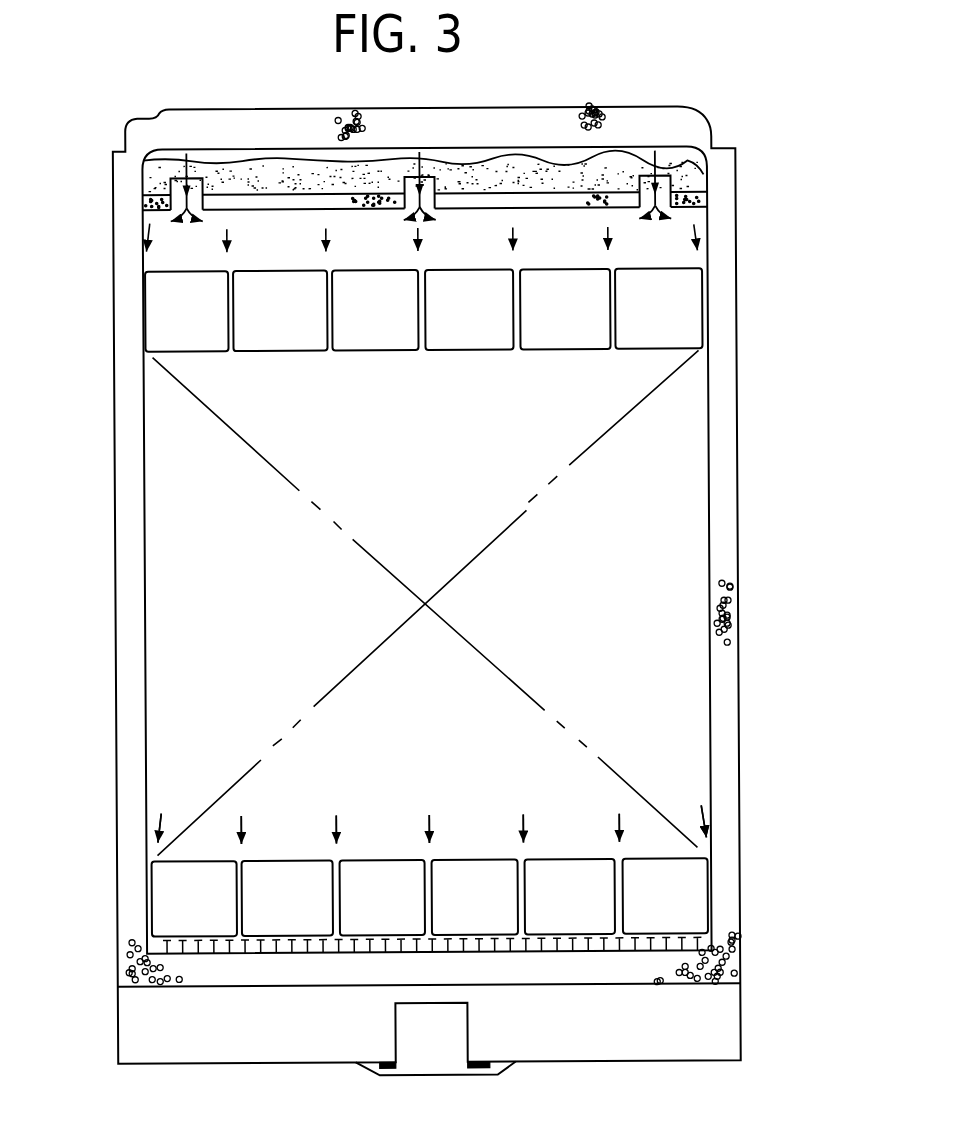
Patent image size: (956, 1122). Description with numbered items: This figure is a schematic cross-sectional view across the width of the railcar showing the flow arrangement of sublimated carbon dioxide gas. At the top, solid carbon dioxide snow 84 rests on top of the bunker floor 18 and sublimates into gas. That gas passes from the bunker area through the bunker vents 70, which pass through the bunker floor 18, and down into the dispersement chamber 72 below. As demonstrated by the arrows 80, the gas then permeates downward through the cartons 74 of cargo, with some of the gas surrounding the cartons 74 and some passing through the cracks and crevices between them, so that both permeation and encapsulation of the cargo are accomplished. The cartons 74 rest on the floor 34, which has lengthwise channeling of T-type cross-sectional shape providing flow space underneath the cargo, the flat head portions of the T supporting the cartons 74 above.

The CO2 snow 84 is at (366, 167).
The bunker floor 18 is at (374, 196).
The bunker vent 70 is at (660, 172).
The dispersement chamber 72 is at (163, 243).
The arrows 80 is at (608, 237).
The cartons 74 is at (674, 312).
The floor 34 is at (592, 932).